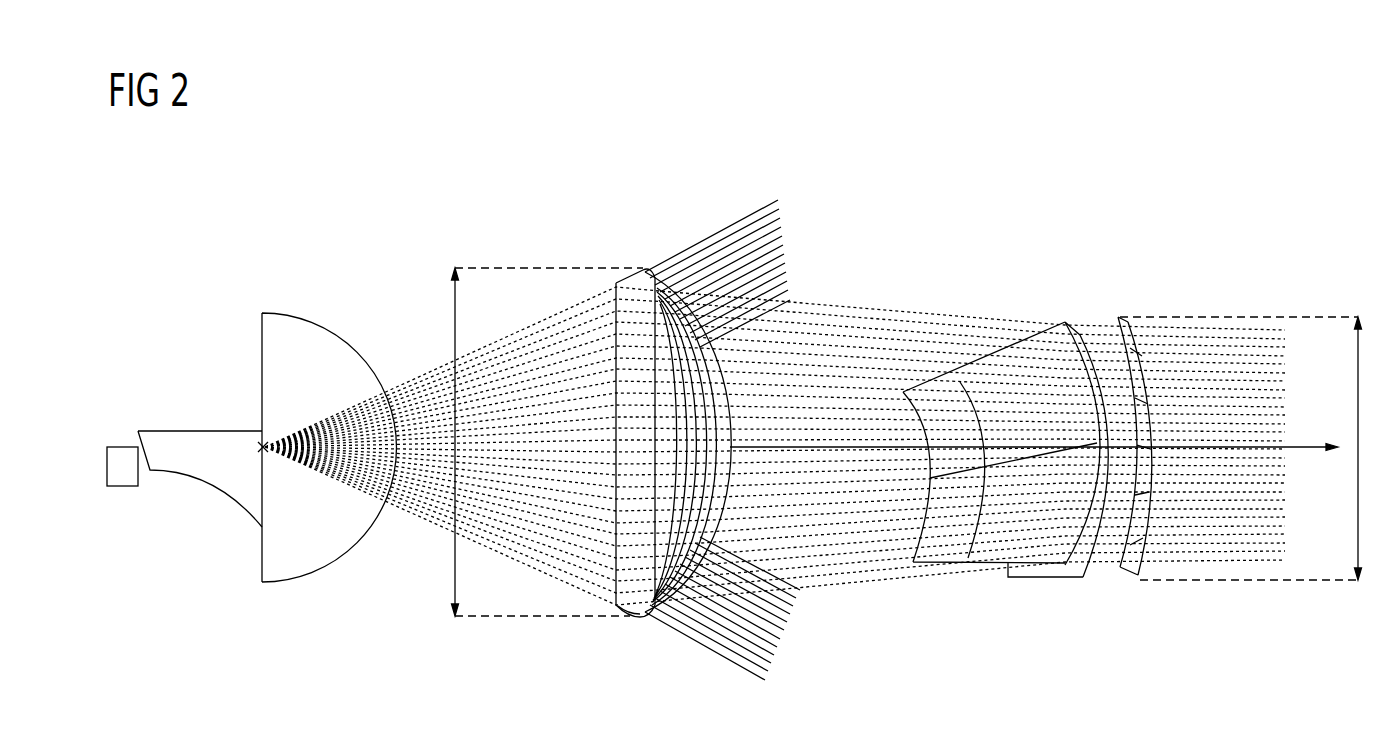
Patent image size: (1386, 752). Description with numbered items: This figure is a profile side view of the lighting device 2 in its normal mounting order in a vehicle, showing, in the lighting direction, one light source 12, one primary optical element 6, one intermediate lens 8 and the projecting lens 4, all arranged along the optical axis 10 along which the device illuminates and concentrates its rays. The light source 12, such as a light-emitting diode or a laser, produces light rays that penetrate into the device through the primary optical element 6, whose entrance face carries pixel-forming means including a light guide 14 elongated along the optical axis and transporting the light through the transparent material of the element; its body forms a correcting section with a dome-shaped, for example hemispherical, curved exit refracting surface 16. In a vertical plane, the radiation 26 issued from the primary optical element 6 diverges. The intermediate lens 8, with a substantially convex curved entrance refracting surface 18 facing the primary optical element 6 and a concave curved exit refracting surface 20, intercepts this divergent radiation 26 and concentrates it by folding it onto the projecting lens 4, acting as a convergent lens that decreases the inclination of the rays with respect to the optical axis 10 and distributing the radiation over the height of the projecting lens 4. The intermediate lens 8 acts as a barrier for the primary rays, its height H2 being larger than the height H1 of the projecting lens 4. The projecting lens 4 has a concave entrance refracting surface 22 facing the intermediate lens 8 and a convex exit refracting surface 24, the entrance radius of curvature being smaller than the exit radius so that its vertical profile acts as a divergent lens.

The lighting device 2 is at (484, 154).
The projecting lens 4 is at (1026, 284).
The primary optical element 6 is at (264, 280).
The intermediate lens 8 is at (639, 248).
The optical axis 10 is at (1307, 450).
The light source 12 is at (120, 487).
The light guide 14 is at (207, 477).
The curved exit refracting surface 16 is at (308, 560).
The entrance refracting surface 18 is at (638, 608).
The exit refracting surface 20 is at (687, 587).
The entrance refracting surface 22 is at (1037, 555).
The exit refracting surface 24 is at (1143, 567).
The radiation 26 is at (428, 508).
The height of the projecting lens H1 is at (1241, 448).
The height of the intermediate lens H2 is at (455, 337).